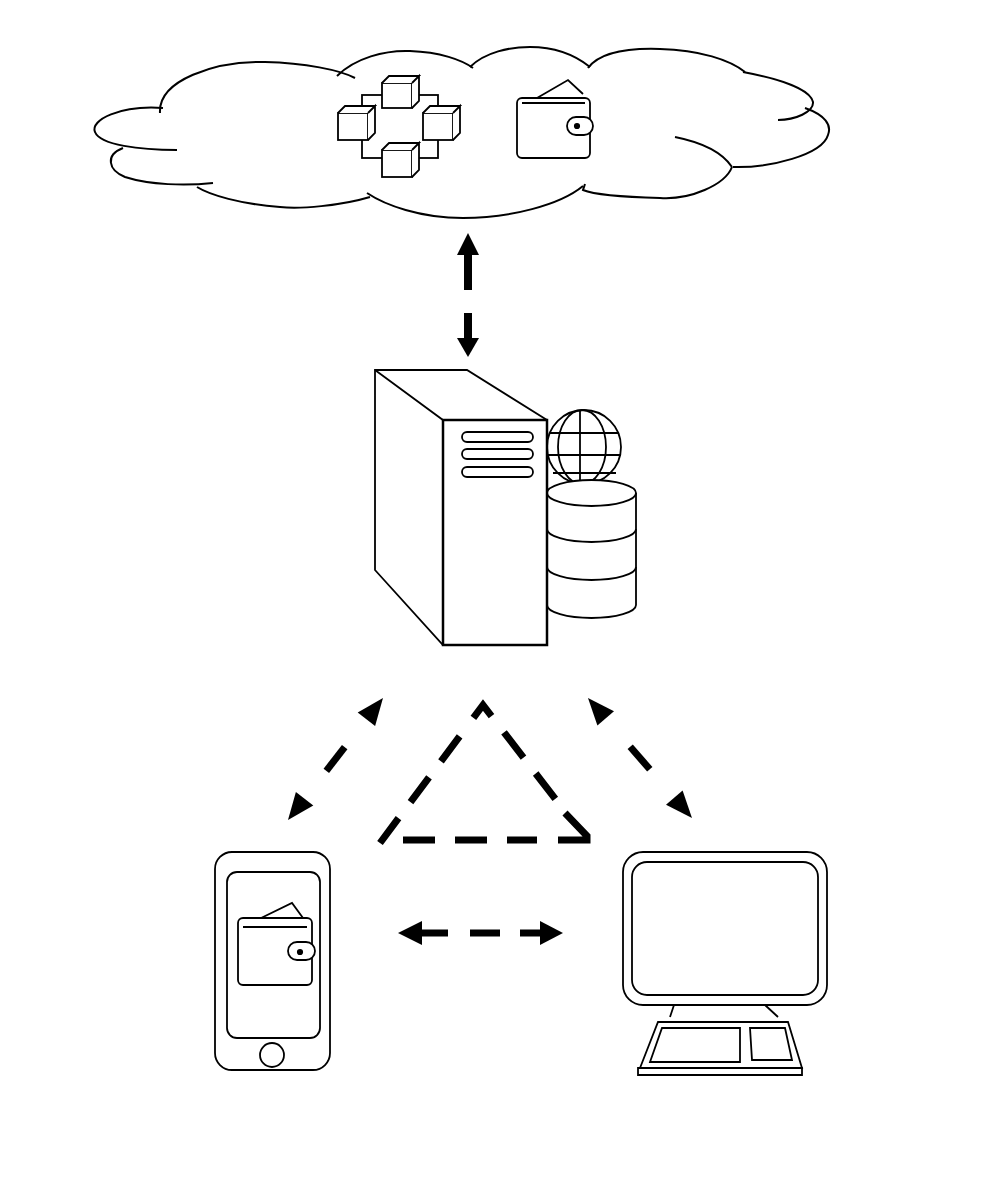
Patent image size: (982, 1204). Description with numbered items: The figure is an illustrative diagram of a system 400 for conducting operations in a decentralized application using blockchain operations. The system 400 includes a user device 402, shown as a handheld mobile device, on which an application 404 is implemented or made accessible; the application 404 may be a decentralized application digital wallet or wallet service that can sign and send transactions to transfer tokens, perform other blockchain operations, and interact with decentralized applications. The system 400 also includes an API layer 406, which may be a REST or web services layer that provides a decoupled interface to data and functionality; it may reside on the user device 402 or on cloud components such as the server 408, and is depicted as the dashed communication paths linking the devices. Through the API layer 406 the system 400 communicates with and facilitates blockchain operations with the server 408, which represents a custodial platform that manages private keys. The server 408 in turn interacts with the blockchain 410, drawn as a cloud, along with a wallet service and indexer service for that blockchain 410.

The system 400 is at (482, 29).
The user device 402 is at (235, 843).
The application 404 is at (248, 957).
The API layer 406 is at (507, 811).
The server 408 is at (358, 439).
The blockchain 410 is at (528, 217).